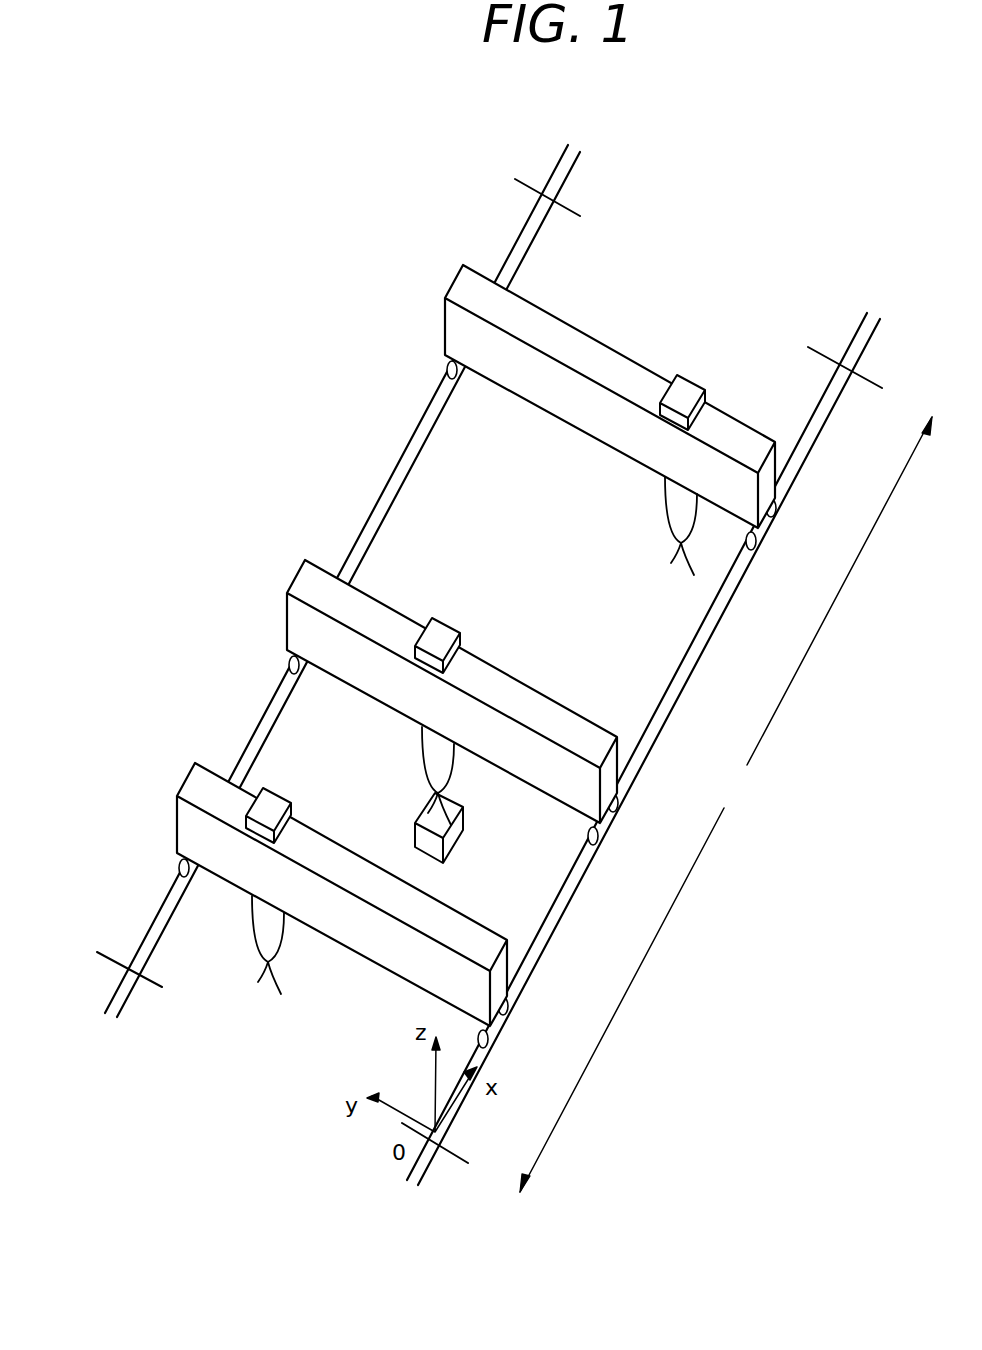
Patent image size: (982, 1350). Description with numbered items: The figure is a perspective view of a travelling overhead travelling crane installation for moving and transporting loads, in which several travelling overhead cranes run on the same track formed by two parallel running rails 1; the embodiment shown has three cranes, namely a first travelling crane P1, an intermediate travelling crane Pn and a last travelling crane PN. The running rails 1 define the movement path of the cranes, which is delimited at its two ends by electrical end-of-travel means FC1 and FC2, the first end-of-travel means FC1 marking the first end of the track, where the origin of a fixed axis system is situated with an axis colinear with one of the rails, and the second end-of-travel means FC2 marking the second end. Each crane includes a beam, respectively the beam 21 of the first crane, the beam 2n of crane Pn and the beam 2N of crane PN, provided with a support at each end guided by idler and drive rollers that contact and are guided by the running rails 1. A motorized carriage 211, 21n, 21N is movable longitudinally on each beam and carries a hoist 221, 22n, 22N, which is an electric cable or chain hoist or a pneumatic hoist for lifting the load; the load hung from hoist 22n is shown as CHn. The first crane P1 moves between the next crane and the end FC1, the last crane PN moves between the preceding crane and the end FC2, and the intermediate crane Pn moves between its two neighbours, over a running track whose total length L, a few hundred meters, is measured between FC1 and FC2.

The running rails 1 is at (413, 453).
The first electrical end-of-travel means FC1 is at (118, 965).
The second electrical end-of-travel means FC2 is at (542, 192).
The last travelling crane PN is at (593, 402).
The travelling crane Pn is at (435, 691).
The first travelling crane P1 is at (323, 874).
The beam of the last travelling crane 2N is at (743, 425).
The beam 2n is at (587, 715).
The beam of the first travelling crane 21 is at (477, 920).
The carriage of the last travelling crane 21N is at (695, 385).
The carriage 21n is at (442, 625).
The carriage of the first travelling crane 211 is at (277, 808).
The hoist of the last travelling crane 22N is at (651, 526).
The hoist 22n is at (405, 776).
The hoist of the first travelling crane 221 is at (239, 945).
The n-th chamber / container CHn is at (462, 838).
The total length of the running track L is at (726, 804).